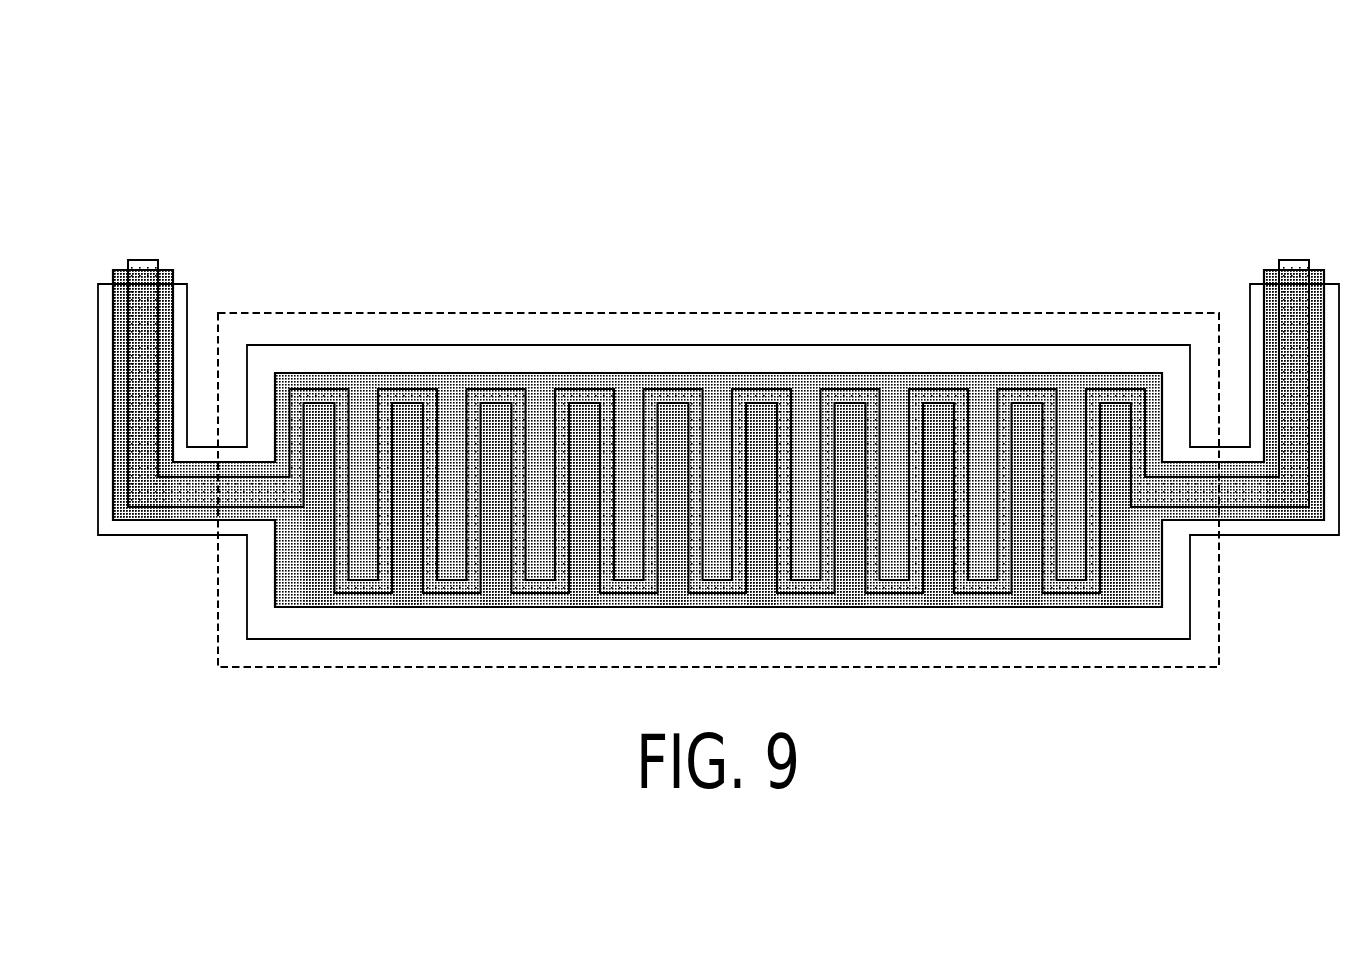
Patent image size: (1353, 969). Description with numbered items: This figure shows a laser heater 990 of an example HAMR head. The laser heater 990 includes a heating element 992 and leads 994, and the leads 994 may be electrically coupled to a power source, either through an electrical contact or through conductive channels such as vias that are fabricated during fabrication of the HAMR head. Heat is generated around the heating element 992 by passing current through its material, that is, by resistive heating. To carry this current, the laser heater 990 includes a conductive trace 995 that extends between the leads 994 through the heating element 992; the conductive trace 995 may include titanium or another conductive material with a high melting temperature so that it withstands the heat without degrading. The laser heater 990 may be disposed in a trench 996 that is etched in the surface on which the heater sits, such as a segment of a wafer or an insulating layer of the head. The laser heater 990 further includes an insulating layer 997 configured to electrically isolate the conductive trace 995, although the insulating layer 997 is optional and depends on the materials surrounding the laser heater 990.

The laser heater 990 is at (792, 136).
The heating element 992 is at (568, 330).
The leads 994 is at (205, 262).
The conductive trace 995 is at (850, 395).
The trench 996 is at (400, 357).
The insulating layer 997 is at (718, 388).